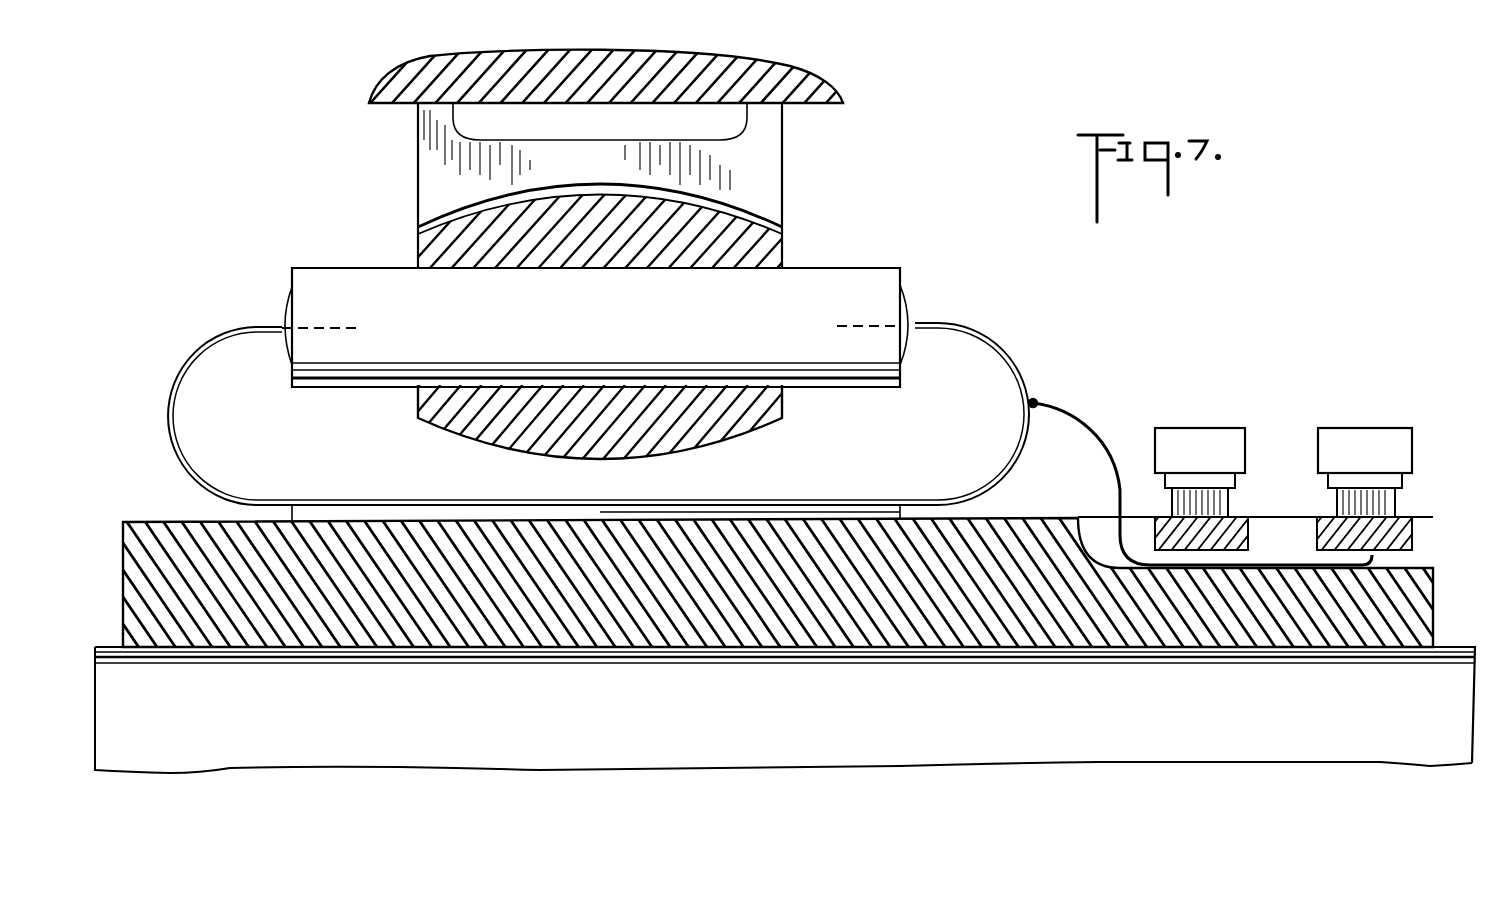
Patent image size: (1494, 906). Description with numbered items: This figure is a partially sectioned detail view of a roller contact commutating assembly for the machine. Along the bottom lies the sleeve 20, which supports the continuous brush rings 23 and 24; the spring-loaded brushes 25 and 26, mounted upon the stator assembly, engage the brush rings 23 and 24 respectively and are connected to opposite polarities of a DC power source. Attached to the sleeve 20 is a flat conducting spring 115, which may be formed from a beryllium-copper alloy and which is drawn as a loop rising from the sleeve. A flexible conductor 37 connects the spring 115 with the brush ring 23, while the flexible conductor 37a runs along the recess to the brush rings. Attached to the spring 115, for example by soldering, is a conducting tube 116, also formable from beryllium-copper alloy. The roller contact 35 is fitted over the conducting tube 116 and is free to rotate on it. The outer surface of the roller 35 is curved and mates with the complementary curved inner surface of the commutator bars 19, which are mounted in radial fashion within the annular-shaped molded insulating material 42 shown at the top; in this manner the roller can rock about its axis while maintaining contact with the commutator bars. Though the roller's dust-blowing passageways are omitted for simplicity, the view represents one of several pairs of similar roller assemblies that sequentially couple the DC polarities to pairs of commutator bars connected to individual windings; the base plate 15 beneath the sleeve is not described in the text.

The support plate 15 is at (1455, 644).
The commutator bars 19 is at (425, 170).
The sleeve 20 is at (155, 522).
The brush ring 23 is at (1240, 526).
The brush ring 24 is at (1395, 522).
The brush 25 is at (1158, 437).
The brush 26 is at (1398, 430).
The roller contact 35 is at (425, 244).
The flexible conductor 37 is at (1078, 418).
The flexible conductor 37a is at (1287, 563).
The molded insulating material 42 is at (413, 70).
The conducting spring 115 is at (183, 368).
The conducting tube 116 is at (890, 267).